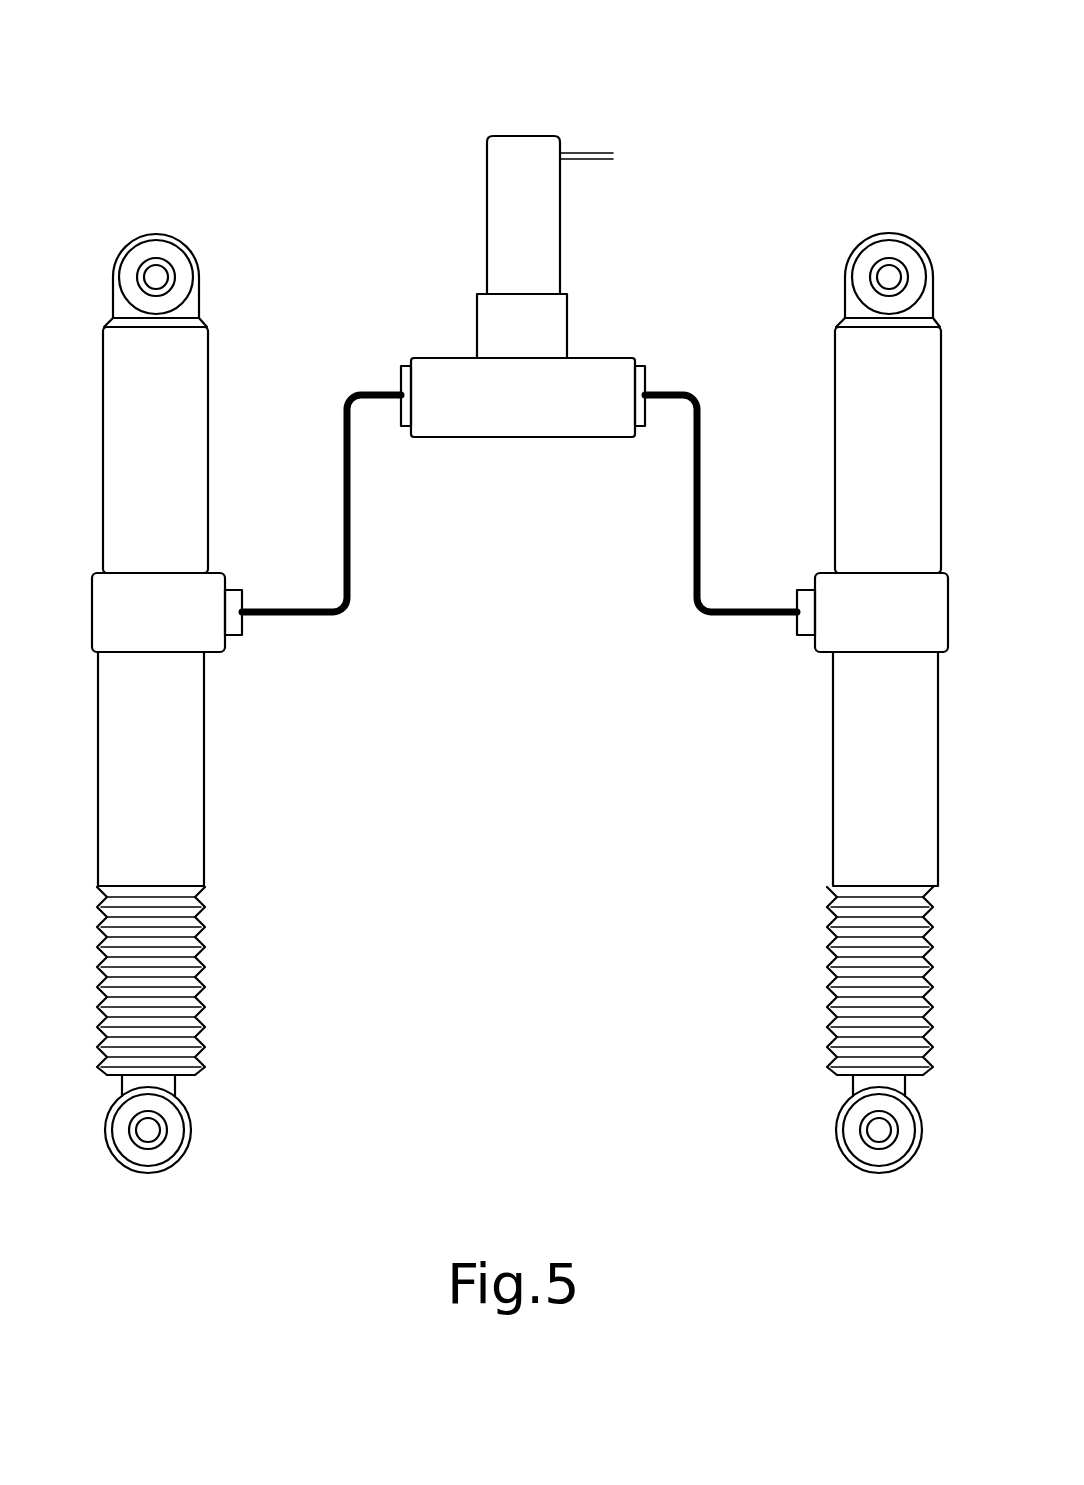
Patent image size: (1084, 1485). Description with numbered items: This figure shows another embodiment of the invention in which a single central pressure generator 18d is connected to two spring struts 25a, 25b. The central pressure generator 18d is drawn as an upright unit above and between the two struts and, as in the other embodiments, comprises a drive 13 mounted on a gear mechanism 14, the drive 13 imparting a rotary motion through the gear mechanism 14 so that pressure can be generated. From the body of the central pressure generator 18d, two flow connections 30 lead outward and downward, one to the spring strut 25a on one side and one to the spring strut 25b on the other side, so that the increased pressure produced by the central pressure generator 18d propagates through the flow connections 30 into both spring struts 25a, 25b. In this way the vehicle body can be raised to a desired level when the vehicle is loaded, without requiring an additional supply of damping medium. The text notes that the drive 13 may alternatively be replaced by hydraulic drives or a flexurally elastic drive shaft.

The central pressure generator 18d is at (558, 231).
The drive 13 is at (530, 233).
The gear mechanism 14 is at (533, 331).
The spring strut 25a is at (177, 787).
The spring strut 25b is at (862, 792).
The flow connections 30 is at (693, 525).